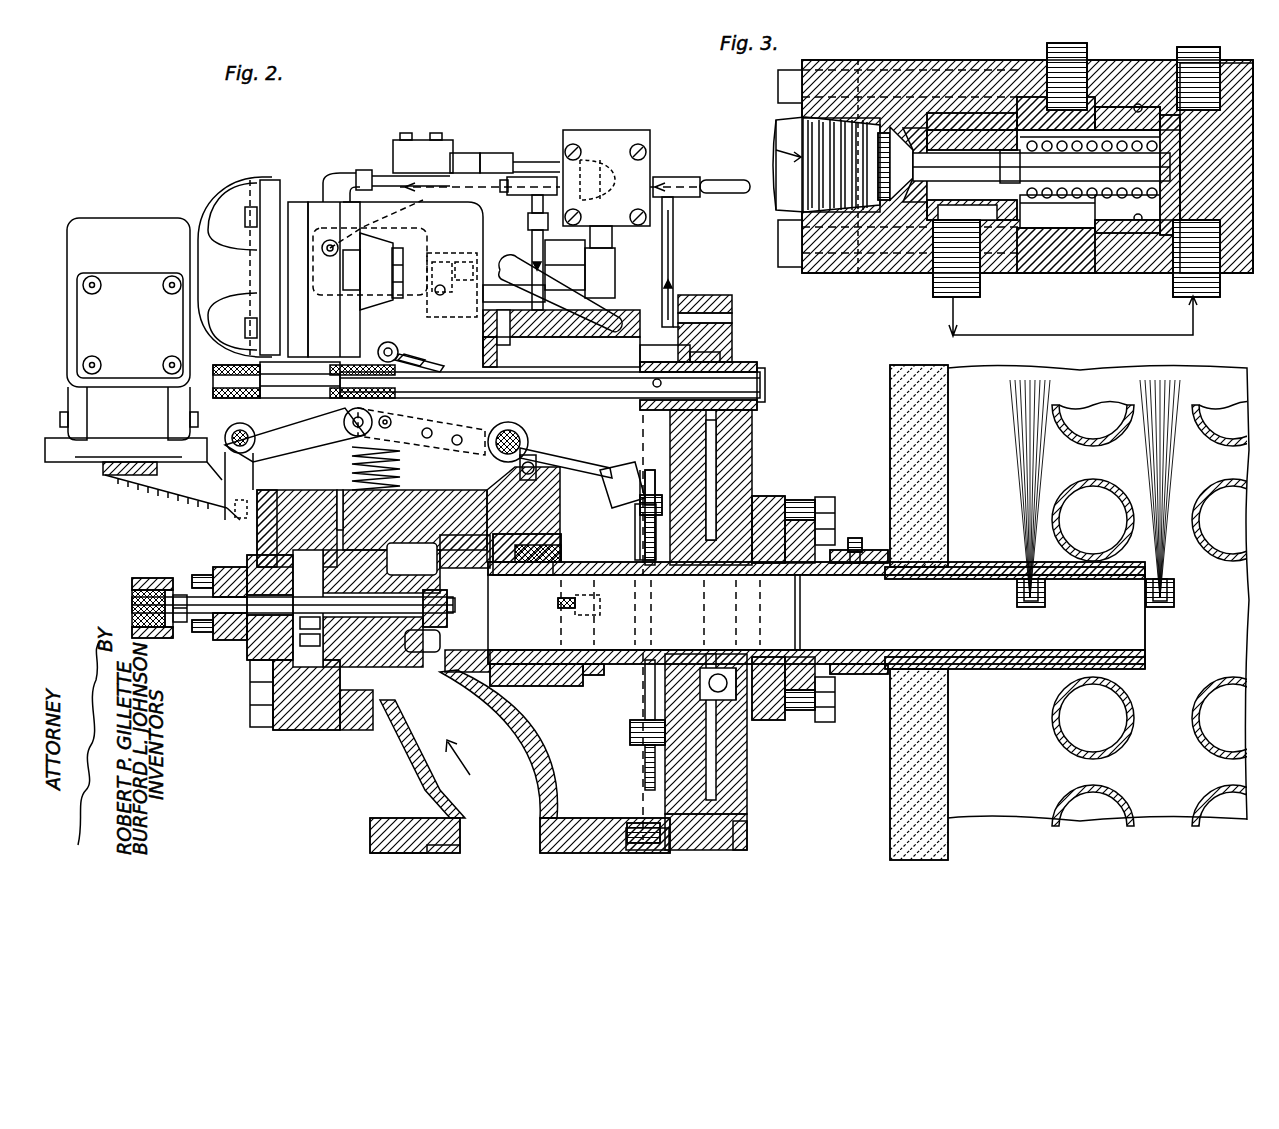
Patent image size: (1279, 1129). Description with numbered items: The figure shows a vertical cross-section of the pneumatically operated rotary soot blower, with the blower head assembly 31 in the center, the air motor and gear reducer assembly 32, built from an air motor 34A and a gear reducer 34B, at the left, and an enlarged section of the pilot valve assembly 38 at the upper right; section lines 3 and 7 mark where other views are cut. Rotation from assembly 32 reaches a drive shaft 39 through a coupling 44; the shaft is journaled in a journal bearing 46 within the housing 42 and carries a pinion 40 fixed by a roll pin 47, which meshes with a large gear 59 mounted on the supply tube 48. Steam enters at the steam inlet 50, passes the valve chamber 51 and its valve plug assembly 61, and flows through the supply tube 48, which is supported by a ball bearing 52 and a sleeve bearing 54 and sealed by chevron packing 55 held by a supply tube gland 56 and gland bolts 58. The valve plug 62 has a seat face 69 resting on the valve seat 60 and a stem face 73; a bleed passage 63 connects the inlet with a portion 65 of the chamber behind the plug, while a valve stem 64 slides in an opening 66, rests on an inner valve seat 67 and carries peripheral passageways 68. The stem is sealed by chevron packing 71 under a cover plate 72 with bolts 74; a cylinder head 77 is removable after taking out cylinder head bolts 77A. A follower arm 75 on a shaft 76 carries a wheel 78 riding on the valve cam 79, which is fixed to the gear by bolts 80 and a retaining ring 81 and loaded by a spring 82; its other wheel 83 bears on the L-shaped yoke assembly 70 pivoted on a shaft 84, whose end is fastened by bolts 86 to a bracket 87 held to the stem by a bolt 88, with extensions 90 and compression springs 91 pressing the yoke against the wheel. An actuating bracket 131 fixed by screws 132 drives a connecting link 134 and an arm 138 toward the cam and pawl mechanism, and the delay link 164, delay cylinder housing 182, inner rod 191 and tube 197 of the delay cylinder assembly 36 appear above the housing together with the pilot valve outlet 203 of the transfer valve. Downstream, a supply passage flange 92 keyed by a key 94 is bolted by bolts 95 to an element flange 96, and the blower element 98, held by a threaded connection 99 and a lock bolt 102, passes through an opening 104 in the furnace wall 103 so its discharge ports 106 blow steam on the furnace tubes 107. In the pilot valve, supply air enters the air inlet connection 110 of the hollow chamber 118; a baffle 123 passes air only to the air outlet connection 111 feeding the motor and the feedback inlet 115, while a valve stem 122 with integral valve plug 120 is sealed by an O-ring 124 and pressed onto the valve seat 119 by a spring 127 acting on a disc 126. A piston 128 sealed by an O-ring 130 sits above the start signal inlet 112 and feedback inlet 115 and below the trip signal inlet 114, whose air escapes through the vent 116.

In FIG. 2, the blower head assembly 31 is at (397, 749).
In FIG. 2, the air motor and gear reducer assembly 32 is at (199, 189).
In FIG. 2, the air motor 34A is at (304, 207).
In FIG. 2, the gear reducer 34B is at (108, 225).
In FIG. 2, the delay cylinder assembly 36 is at (353, 296).
In FIG. 2, the pilot valve assembly 38 is at (582, 124).
In FIG. 3, the pilot valve assembly 38 is at (893, 288).
In FIG. 2, the drive shaft 39 is at (312, 363).
In FIG. 2, the pinion 40 is at (645, 357).
In FIG. 2, the housing 42 is at (705, 302).
In FIG. 2, the coupling 44 is at (268, 190).
In FIG. 2, the journal bearing 46 is at (744, 364).
In FIG. 2, the roll pin 47 is at (652, 383).
In FIG. 2, the supply tube 48 is at (615, 660).
In FIG. 2, the steam inlet 50 is at (432, 790).
In FIG. 2, the valve chamber 51 is at (423, 580).
In FIG. 2, the ball bearing 52 is at (730, 690).
In FIG. 2, the sleeve bearing 54 is at (516, 536).
In FIG. 2, the chevron packing 55 is at (530, 690).
In FIG. 2, the supply tube gland 56 is at (582, 676).
In FIG. 2, the gland bolts 58 is at (555, 620).
In FIG. 2, the large gear 59 is at (696, 474).
In FIG. 2, the valve seat 60 is at (490, 576).
In FIG. 2, the valve plug assembly 61 is at (420, 648).
In FIG. 2, the valve plug 62 is at (490, 652).
In FIG. 2, the bleed passage 63 is at (328, 653).
In FIG. 2, the valve stem 64 is at (307, 602).
In FIG. 2, the portion of valve chamber 65 is at (308, 608).
In FIG. 2, the opening 66 is at (392, 600).
In FIG. 2, the inner valve seat 67 is at (490, 606).
In FIG. 2, the passageways 68 is at (417, 640).
In FIG. 2, the seat face 69 is at (452, 692).
In FIG. 2, the yoke assembly 70 is at (292, 458).
In FIG. 2, the chevron packing 71 is at (253, 622).
In FIG. 2, the cover plate 72 is at (227, 660).
In FIG. 2, the stem face 73 is at (312, 621).
In FIG. 2, the bolts 74 is at (217, 622).
In FIG. 2, the follower arm 75 is at (560, 450).
In FIG. 2, the shaft 76 is at (532, 474).
In FIG. 2, the cylinder head 77 is at (307, 732).
In FIG. 2, the cylinder head bolts 77A is at (258, 728).
In FIG. 2, the rotatable wheel 78 is at (622, 480).
In FIG. 2, the valve cam 79 is at (662, 493).
In FIG. 2, the bolts 80 is at (630, 738).
In FIG. 2, the retaining ring 81 is at (645, 508).
In FIG. 2, the spring 82 is at (402, 470).
In FIG. 2, the rotatable wheel 83 is at (330, 432).
In FIG. 2, the shaft 84 is at (232, 430).
In FIG. 2, the bolts 86 is at (197, 627).
In FIG. 2, the bracket 87 is at (131, 569).
In FIG. 2, the bolt 88 is at (155, 570).
In FIG. 2, the extensions 90 is at (213, 568).
In FIG. 2, the compression springs 91 is at (398, 375).
In FIG. 2, the supply passage flange 92 is at (780, 505).
In FIG. 2, the key 94 is at (762, 572).
In FIG. 2, the bolts 95 is at (835, 515).
In FIG. 2, the element flange 96 is at (822, 500).
In FIG. 2, the blower element 98 is at (1150, 670).
In FIG. 2, the threaded connection 99 is at (835, 650).
In FIG. 2, the lock bolt 102 is at (858, 540).
In FIG. 2, the furnace wall 103 is at (948, 520).
In FIG. 2, the opening 104 is at (952, 575).
In FIG. 2, the discharge ports 106 is at (1045, 607).
In FIG. 2, the furnace tubes 107 is at (1120, 484).
In FIG. 2, the air inlet connection 110 is at (605, 158).
In FIG. 3, the air inlet connection 110 is at (790, 128).
In FIG. 2, the air outlet connection 111 is at (540, 170).
In FIG. 3, the air outlet connection 111 is at (970, 290).
In FIG. 3, the start signal inlet 112 is at (1204, 70).
In FIG. 2, the trip signal inlet 114 is at (662, 178).
In FIG. 3, the trip signal inlet 114 is at (1050, 50).
In FIG. 2, the feedback inlet 115 is at (572, 284).
In FIG. 3, the feedback inlet 115 is at (1213, 290).
In FIG. 3, the vent 116 is at (1047, 273).
In FIG. 3, the hollow chamber 118 is at (957, 120).
In FIG. 3, the valve seat 119 is at (908, 130).
In FIG. 3, the valve plug 120 is at (858, 253).
In FIG. 3, the valve stem 122 is at (910, 233).
In FIG. 3, the baffle 123 is at (1080, 184).
In FIG. 3, the O-ring 124 is at (1041, 184).
In FIG. 3, the disc 126 is at (1092, 178).
In FIG. 3, the spring 127 is at (1108, 140).
In FIG. 3, the piston 128 is at (1113, 227).
In FIG. 3, the O-ring 130 is at (1138, 107).
In FIG. 2, the actuating bracket 131 is at (428, 420).
In FIG. 2, the screws 132 is at (505, 426).
In FIG. 2, the connecting link 134 is at (400, 345).
In FIG. 2, the arm 138 is at (386, 340).
In FIG. 2, the delay link 164 is at (490, 293).
In FIG. 2, the delay cylinder housing 182 is at (428, 230).
In FIG. 2, the inner rod 191 is at (462, 256).
In FIG. 2, the tube 197 is at (400, 222).
In FIG. 2, the pilot valve outlet 203 is at (508, 262).
In FIG. 2, the section line 3- 3 is at (543, 186).
In FIG. 2, the section line 7- 7 is at (635, 429).